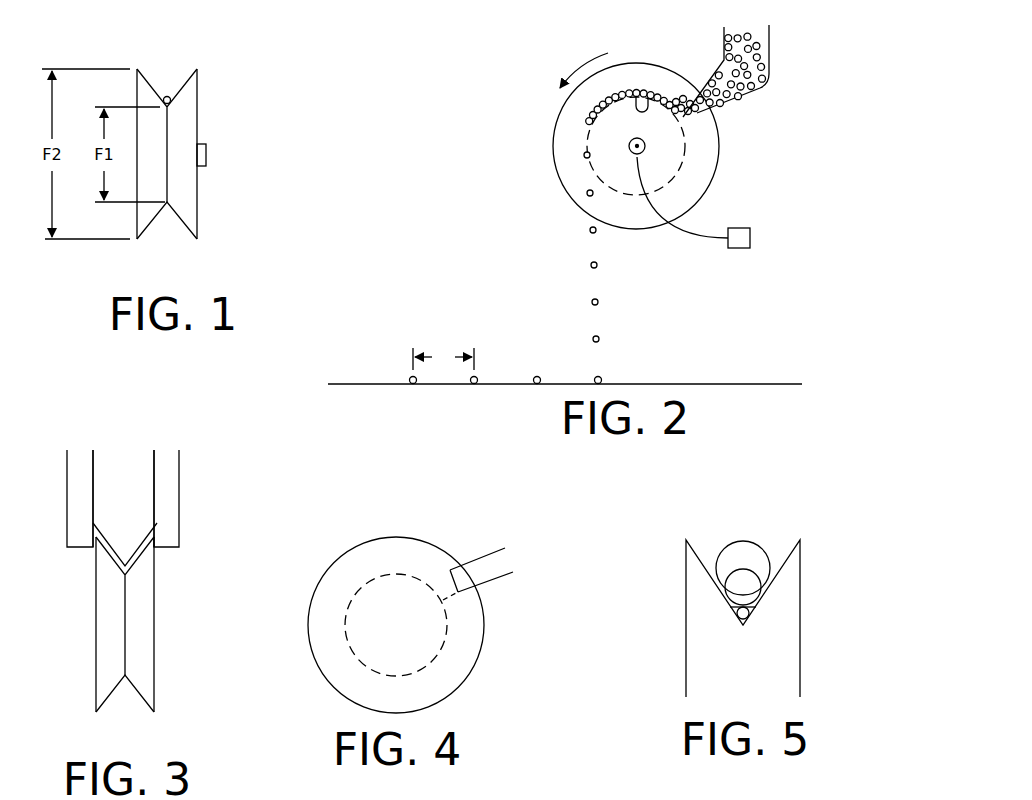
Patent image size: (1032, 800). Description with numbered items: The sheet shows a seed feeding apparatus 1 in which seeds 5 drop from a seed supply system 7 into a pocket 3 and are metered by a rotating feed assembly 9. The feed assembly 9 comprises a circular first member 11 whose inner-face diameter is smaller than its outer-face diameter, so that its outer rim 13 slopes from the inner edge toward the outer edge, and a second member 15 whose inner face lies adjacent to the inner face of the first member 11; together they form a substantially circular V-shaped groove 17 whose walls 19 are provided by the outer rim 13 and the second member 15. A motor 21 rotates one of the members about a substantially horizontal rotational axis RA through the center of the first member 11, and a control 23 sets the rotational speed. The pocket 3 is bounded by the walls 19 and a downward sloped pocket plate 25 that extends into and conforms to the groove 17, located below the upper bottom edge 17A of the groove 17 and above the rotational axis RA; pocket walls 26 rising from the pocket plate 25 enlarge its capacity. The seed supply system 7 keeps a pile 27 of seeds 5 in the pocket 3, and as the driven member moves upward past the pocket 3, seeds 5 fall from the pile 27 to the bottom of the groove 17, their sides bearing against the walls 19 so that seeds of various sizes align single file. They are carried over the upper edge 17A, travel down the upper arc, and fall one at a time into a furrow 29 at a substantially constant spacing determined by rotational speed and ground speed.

In FIG. 2, the seed feeding apparatus 1 is at (566, 194).
In FIG. 2, the pocket 3 is at (667, 93).
In FIG. 3, the pocket 3 is at (123, 540).
In FIG. 4, the pocket 3 is at (438, 587).
In FIG. 2, the seeds 5 is at (750, 58).
In FIG. 5, the seeds 5 is at (740, 541).
In FIG. 2, the seed supply system 7 is at (744, 73).
In FIG. 1, the feed assembly 9 is at (180, 148).
In FIG. 2, the feed assembly 9 is at (556, 208).
In FIG. 4, the feed assembly 9 is at (396, 625).
In FIG. 5, the feed assembly 9 is at (724, 595).
In FIG. 1, the first member 11 is at (137, 223).
In FIG. 3, the first member 11 is at (96, 622).
In FIG. 1, the outer rim 13 is at (156, 229).
In FIG. 1, the second member 15 is at (198, 226).
In FIG. 3, the second member 15 is at (154, 622).
In FIG. 3, the V-shaped groove 17 is at (127, 695).
In FIG. 5, the V-shaped groove 17 is at (777, 542).
In FIG. 2, the upper bottom edge 17A is at (652, 94).
In FIG. 4, the upper bottom edge 17A is at (392, 572).
In FIG. 1, the walls 19 is at (182, 80).
In FIG. 3, the walls 19 is at (108, 703).
In FIG. 5, the walls 19 is at (698, 555).
In FIG. 1, the motor 21 is at (208, 165).
In FIG. 2, the motor 21 is at (647, 157).
In FIG. 2, the control 23 is at (750, 238).
In FIG. 2, the pocket plate 25 is at (688, 117).
In FIG. 3, the pocket plate 25 is at (154, 505).
In FIG. 4, the pocket plate 25 is at (467, 598).
In FIG. 3, the pocket walls 26 is at (179, 463).
In FIG. 4, the pocket walls 26 is at (488, 553).
In FIG. 2, the pile 27 is at (680, 93).
In FIG. 2, the furrow 29 is at (660, 384).
In FIG. 1, the rotational axis RA is at (206, 155).
In FIG. 2, the rotational axis RA is at (629, 146).